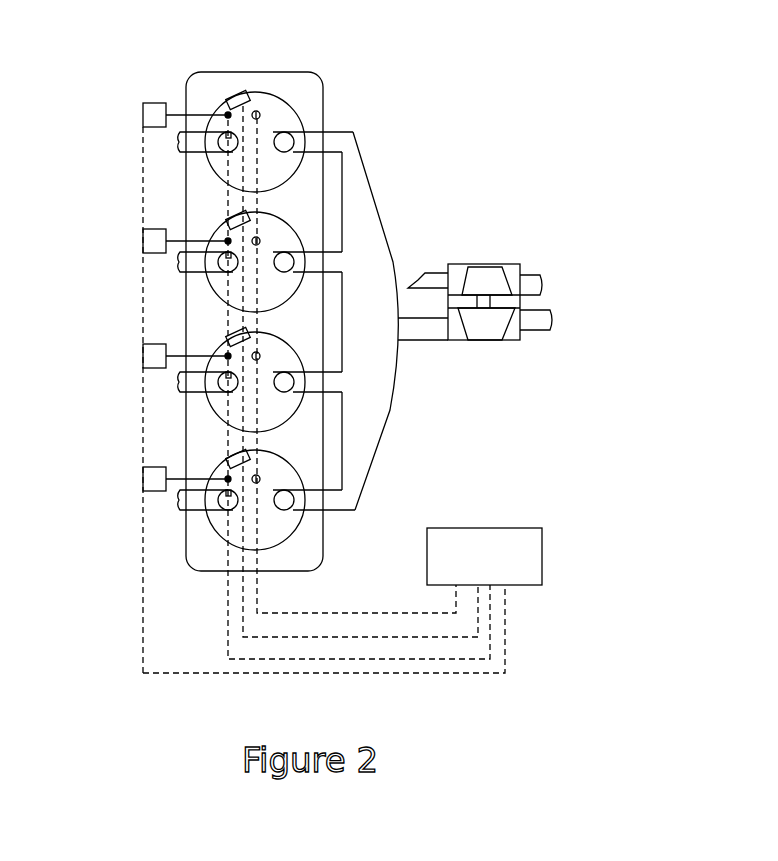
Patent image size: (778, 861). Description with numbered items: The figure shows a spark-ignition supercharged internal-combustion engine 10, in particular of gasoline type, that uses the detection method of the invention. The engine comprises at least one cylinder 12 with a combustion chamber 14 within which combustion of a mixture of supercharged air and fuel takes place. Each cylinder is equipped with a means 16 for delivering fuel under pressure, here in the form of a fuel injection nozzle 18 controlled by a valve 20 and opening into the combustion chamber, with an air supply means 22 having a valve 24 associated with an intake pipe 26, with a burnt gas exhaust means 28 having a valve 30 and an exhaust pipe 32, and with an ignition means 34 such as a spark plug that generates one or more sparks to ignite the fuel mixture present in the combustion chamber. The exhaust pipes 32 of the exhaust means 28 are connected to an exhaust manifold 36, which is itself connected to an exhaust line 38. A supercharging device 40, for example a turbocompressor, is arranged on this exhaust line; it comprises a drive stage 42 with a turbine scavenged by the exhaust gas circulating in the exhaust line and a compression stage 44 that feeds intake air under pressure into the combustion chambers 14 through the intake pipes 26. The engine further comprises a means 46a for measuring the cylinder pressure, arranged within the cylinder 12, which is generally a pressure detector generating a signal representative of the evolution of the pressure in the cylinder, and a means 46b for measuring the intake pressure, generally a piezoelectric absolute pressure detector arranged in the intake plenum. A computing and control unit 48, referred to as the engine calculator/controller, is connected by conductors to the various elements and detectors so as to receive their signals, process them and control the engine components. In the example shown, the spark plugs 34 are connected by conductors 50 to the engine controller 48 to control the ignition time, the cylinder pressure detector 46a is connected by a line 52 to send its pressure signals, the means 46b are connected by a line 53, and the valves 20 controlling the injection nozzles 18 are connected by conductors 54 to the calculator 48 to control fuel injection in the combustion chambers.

The spark-ignition supercharged internal-combustion engine 10 is at (287, 308).
The cylinder 12 is at (298, 107).
The combustion chamber 14 is at (286, 180).
The means for delivering fuel under pressure 16 is at (128, 228).
The fuel injection nozzle 18 is at (213, 112).
The valve 20 is at (158, 358).
The air supply means 22 is at (198, 512).
The valve 24 is at (237, 390).
The intake pipe 26 is at (200, 275).
The burnt gas exhaust means 28 is at (315, 510).
The valve 30 is at (288, 272).
The exhaust pipe 32 is at (310, 397).
The ignition means 34 is at (259, 112).
The exhaust manifold 36 is at (357, 335).
The exhaust line 38 is at (565, 322).
The supercharging device 40 is at (487, 270).
The drive stage 42 is at (474, 335).
The compression stage 44 is at (474, 294).
The means for measuring the cylinder pressure 46a is at (238, 95).
The means for measuring the intake pressure 46b is at (227, 137).
The computing and control unit 48 is at (472, 567).
The conductors 50 is at (392, 612).
The line 52 is at (315, 638).
The line 53 is at (370, 674).
The conductors 54 is at (141, 597).